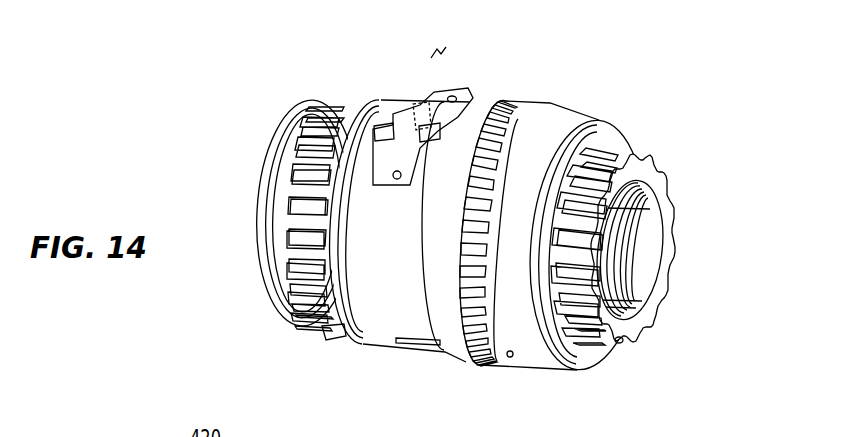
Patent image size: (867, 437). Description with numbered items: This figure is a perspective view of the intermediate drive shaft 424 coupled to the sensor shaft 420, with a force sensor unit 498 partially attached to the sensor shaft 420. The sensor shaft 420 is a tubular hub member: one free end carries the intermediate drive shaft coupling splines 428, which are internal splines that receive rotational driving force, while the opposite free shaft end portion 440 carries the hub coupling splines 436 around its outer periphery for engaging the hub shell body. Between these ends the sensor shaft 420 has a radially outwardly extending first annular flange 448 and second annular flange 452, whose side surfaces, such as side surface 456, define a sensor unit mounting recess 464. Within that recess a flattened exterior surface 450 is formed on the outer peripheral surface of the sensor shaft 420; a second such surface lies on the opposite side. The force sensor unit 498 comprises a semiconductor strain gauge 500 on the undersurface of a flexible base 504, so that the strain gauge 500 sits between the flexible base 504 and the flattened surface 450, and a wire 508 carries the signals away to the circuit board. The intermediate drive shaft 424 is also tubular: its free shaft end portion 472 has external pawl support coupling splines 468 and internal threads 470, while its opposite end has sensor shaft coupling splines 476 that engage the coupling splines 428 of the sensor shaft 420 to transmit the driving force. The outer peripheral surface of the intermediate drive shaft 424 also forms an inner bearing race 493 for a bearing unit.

The sensor shaft 420 is at (480, 222).
The intermediate drive shaft 424 is at (623, 101).
The intermediate drive shaft coupling splines 428 is at (517, 118).
The hub coupling splines 436 is at (340, 99).
The opposite free shaft end portion 440 is at (262, 326).
The first annular flange 448 is at (372, 96).
The flattened exterior surface 450 is at (424, 163).
The second annular flange 452 is at (455, 364).
The side surface 456 is at (334, 338).
The sensor unit mounting recess 464 is at (387, 361).
The pawl support coupling splines 468 is at (644, 157).
The internal threads 470 is at (633, 228).
The free shaft end portion 472 is at (678, 179).
The sensor shaft coupling splines 476 is at (498, 349).
The inner bearing race 493 is at (558, 124).
The force sensor unit 498 is at (471, 76).
The semiconductor strain gauge 500 is at (418, 103).
The flexible base 504 is at (456, 87).
The wire 508 is at (432, 94).